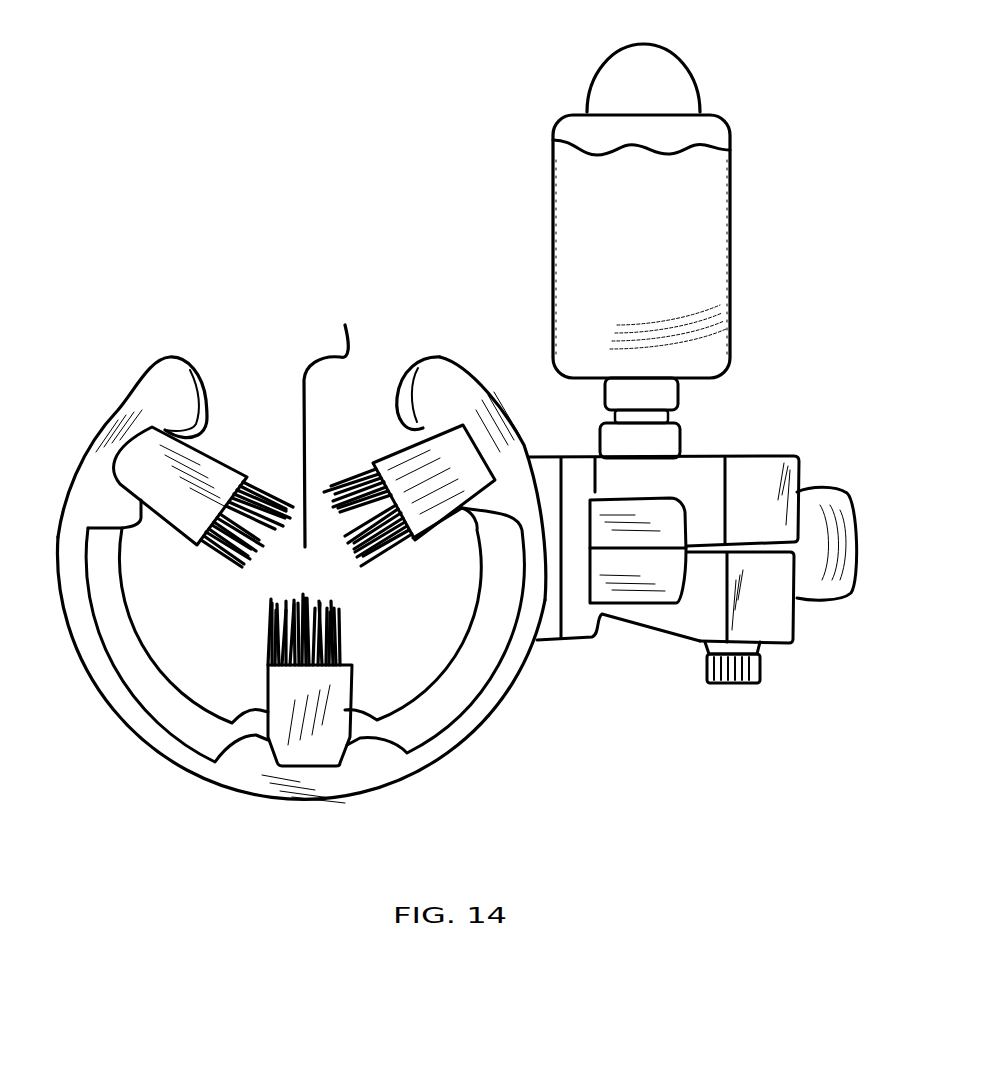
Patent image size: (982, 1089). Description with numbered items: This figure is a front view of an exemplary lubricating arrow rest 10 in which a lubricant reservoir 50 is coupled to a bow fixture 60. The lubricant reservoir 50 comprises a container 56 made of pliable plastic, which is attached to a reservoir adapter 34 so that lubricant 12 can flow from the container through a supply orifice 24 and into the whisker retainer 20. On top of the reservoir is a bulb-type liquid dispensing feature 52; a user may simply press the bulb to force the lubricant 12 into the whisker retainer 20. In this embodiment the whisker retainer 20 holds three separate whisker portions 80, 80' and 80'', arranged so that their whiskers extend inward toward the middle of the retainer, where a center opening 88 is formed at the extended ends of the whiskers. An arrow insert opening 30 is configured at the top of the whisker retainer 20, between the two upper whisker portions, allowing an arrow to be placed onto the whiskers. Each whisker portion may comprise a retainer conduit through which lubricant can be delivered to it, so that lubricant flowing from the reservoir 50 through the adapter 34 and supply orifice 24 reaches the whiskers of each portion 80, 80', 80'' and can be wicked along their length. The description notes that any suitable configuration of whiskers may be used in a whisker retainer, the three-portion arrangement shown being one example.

The lubricating arrow rest 10 is at (335, 169).
The lubricant 12 is at (587, 193).
The whisker retainer 20 is at (173, 380).
The supply orifice 24 is at (593, 440).
The arrow insert opening 30 is at (282, 337).
The reservoir adapter 34 is at (667, 445).
The lubricant reservoir 50 is at (700, 180).
The liquid dispensing feature 52 is at (628, 85).
The container 56 is at (700, 257).
The bow fixture 60 is at (690, 618).
The whisker portion 80 is at (409, 479).
The whisker portion 80' is at (360, 680).
The whisker portion 80'' is at (203, 542).
The center opening 88 is at (332, 424).